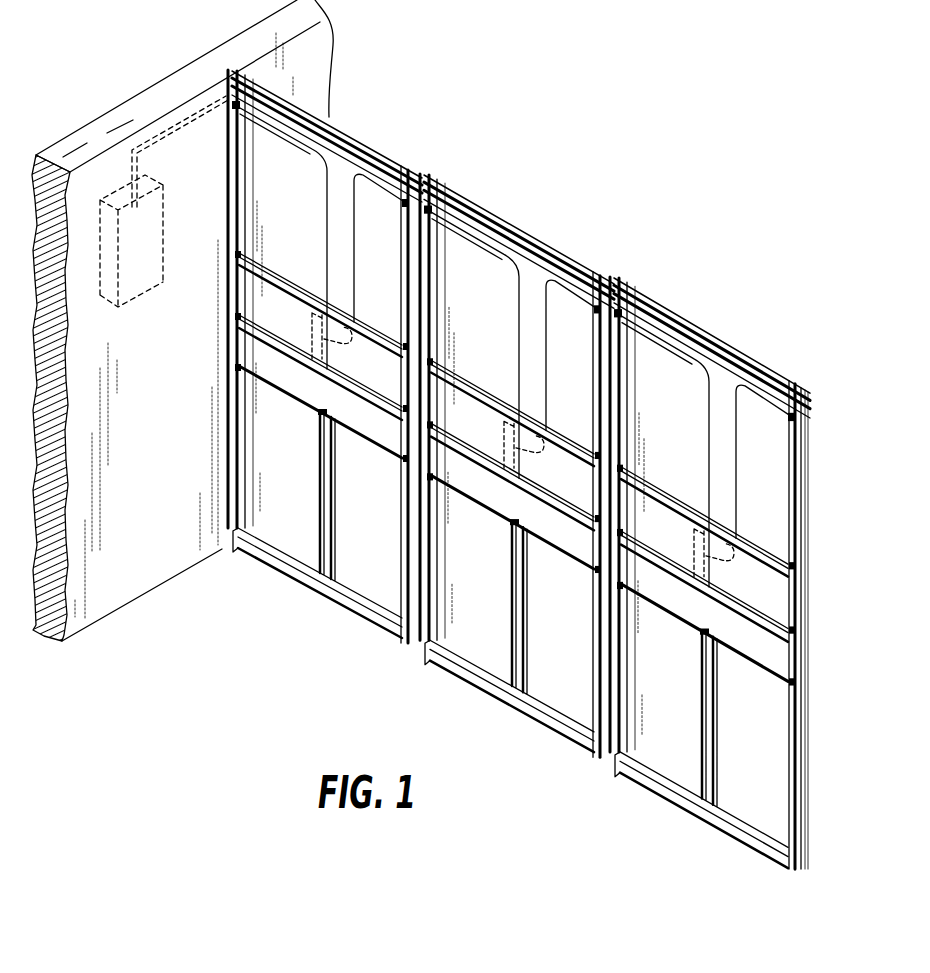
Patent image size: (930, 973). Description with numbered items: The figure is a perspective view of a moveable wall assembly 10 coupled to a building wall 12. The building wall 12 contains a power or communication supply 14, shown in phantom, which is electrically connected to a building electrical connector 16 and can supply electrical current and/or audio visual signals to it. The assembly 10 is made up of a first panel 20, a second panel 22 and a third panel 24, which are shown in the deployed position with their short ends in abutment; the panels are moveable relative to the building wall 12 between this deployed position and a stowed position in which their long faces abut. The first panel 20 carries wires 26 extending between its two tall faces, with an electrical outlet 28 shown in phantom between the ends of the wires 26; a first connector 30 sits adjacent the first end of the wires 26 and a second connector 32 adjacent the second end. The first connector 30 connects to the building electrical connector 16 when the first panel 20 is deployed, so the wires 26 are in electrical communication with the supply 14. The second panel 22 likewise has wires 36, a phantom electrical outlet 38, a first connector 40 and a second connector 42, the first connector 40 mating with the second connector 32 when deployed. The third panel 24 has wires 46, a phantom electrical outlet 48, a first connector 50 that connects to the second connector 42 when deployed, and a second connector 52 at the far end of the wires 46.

The moveable wall assembly 10 is at (534, 156).
The building wall 12 is at (107, 593).
The power or communication supply 14 is at (126, 214).
The building electrical connector 16 is at (183, 118).
The first panel 20 is at (318, 608).
The second panel 22 is at (512, 717).
The third panel 24 is at (693, 818).
The wires 26 is at (330, 158).
The electrical outlet 28 is at (333, 358).
The first connector 30 is at (242, 108).
The second connector 32 is at (403, 210).
The wires 36 is at (520, 268).
The electrical outlet 38 is at (522, 470).
The first connector 40 is at (433, 218).
The second connector 42 is at (600, 323).
The wires 46 is at (713, 385).
The electrical outlet 48 is at (715, 580).
The first connector 50 is at (627, 338).
The second connector 52 is at (795, 433).